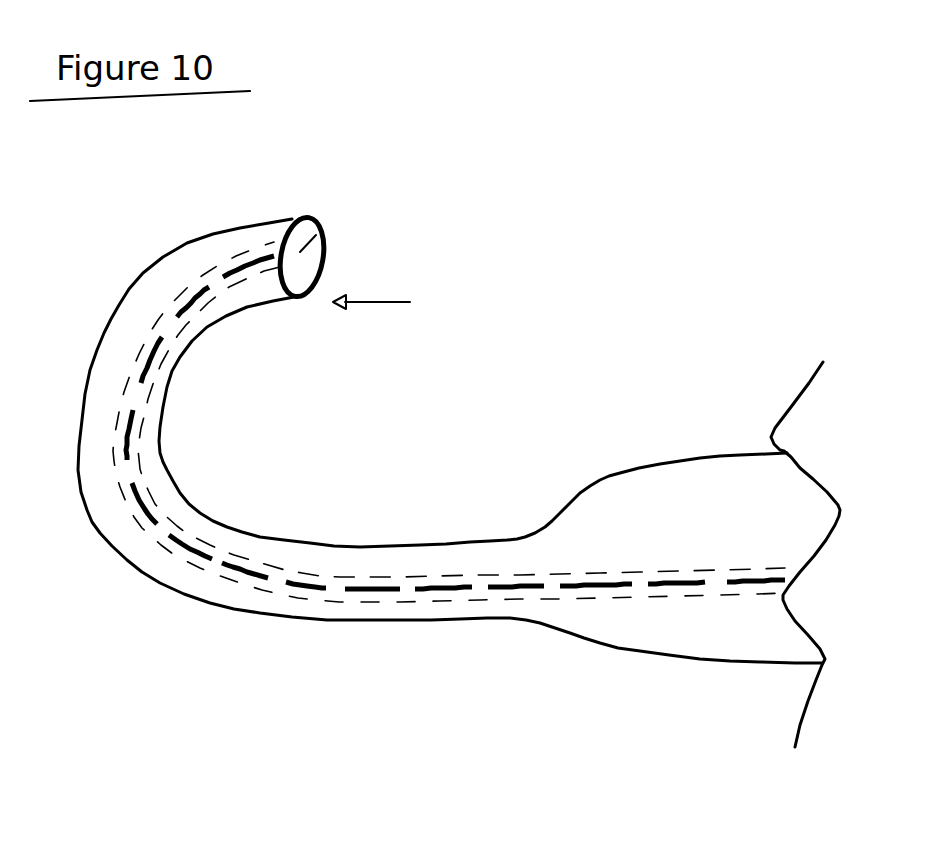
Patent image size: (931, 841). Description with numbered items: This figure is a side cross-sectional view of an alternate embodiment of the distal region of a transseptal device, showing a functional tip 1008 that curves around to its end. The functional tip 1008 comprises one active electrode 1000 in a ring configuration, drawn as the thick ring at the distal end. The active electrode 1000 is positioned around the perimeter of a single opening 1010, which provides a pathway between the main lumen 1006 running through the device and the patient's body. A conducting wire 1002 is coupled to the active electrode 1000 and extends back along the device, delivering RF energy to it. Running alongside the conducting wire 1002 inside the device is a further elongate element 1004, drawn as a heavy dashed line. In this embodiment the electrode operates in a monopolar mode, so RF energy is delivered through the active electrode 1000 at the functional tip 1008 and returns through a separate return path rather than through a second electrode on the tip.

The active electrode 1000 is at (323, 240).
The conducting wire 1002 is at (127, 437).
The tension wire 1004 is at (150, 490).
The main lumen 1006 is at (723, 640).
The functional tip 1008 is at (414, 303).
The opening 1010 is at (323, 223).